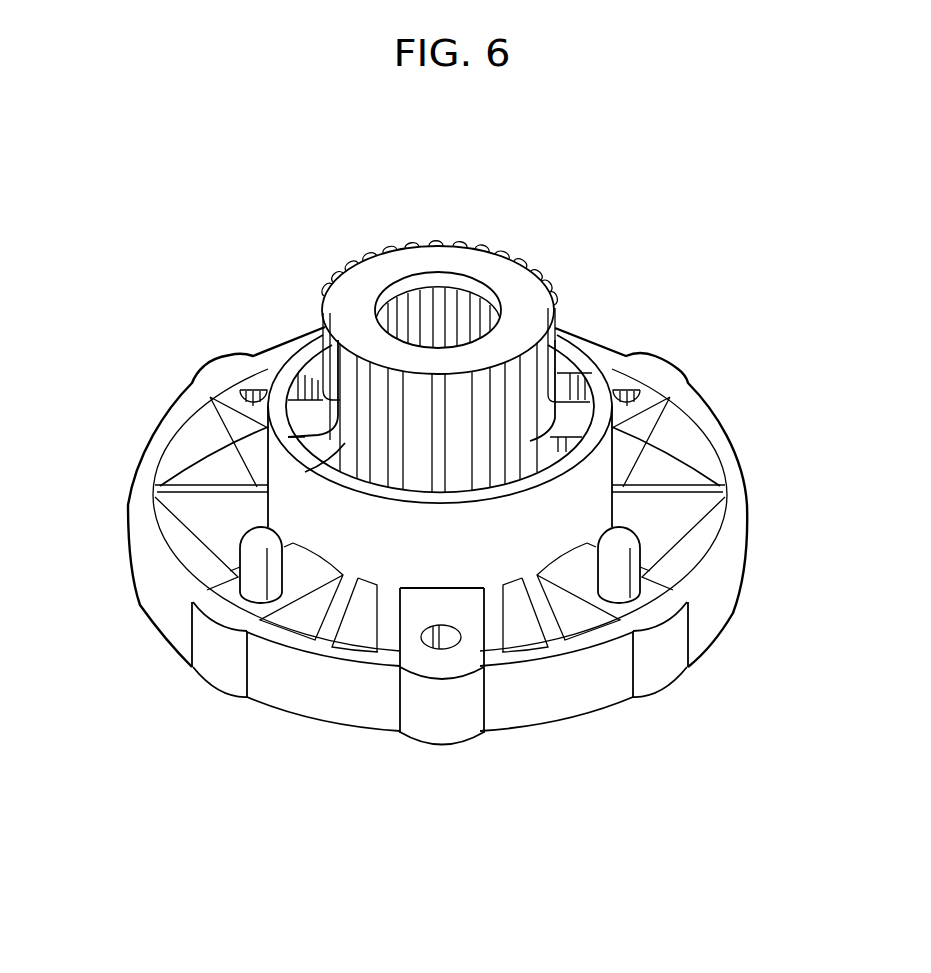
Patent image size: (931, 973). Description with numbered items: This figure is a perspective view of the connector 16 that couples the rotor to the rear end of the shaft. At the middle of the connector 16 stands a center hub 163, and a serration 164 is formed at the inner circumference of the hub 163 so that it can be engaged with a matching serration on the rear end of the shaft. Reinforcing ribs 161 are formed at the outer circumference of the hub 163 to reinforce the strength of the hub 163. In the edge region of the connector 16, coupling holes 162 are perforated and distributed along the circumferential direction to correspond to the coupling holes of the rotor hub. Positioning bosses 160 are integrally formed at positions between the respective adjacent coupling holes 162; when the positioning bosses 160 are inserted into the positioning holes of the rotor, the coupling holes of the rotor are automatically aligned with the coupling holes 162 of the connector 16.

The connector 16 is at (435, 504).
The positioning bosses 160 is at (623, 547).
The reinforcing ribs 161 is at (265, 491).
The coupling holes 162 is at (445, 640).
The center hub 163 is at (379, 270).
The serration 164 is at (440, 300).